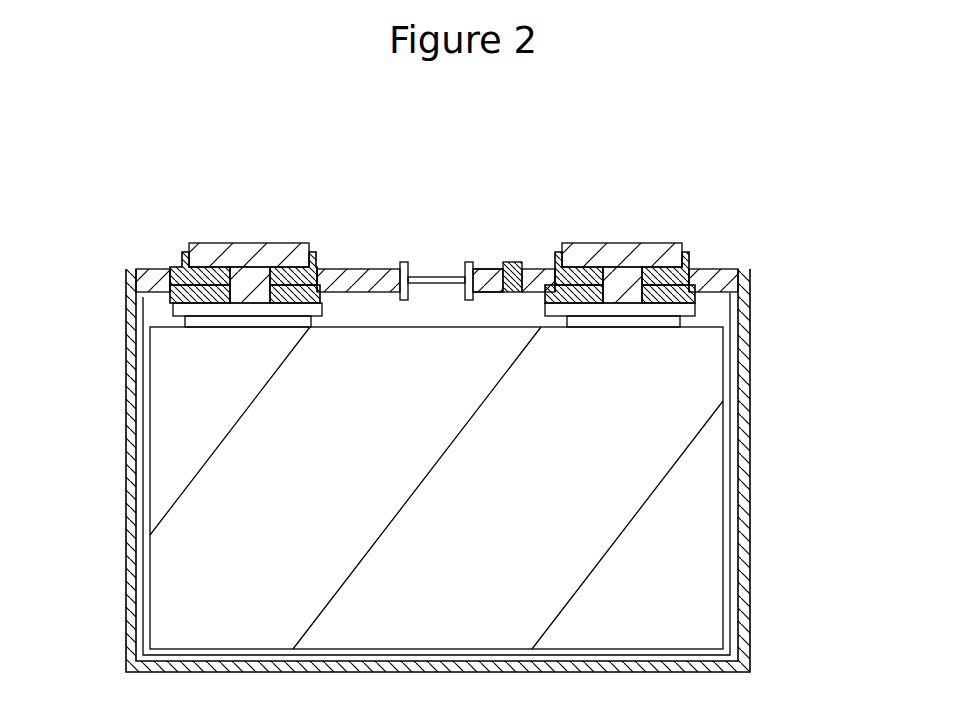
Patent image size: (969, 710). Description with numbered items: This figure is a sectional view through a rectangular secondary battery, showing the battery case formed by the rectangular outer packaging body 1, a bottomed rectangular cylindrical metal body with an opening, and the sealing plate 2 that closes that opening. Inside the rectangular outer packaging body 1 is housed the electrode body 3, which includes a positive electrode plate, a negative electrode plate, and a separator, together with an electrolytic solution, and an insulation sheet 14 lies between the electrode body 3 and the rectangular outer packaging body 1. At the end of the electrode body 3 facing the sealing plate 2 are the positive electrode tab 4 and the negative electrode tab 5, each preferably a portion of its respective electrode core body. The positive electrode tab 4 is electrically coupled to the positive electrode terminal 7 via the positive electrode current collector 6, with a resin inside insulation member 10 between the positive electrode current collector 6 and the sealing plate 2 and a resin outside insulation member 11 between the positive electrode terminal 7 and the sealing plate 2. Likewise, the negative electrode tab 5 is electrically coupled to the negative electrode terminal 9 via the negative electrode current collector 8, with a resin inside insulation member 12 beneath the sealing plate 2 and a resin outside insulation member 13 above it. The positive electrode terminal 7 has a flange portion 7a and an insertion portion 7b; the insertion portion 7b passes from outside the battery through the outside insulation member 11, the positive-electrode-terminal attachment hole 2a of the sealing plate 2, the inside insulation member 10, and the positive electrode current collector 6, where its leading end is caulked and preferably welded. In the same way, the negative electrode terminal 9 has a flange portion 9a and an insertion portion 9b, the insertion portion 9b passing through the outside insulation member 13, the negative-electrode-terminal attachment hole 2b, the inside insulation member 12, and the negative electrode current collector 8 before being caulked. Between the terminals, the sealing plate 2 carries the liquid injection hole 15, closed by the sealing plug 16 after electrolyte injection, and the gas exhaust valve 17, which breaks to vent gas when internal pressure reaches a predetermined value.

The rectangular outer packaging body 1 is at (742, 472).
The sealing plate 2 is at (355, 280).
The positive-electrode-terminal attachment hole 2a is at (612, 285).
The negative-electrode-terminal attachment hole 2b is at (260, 263).
The electrode body 3 is at (243, 497).
The positive electrode tab 4 is at (644, 318).
The negative electrode tab 5 is at (225, 318).
The positive electrode current collector 6 is at (700, 302).
The positive electrode terminal 7 is at (630, 193).
The flange portion 7a is at (577, 255).
The insertion portion 7b is at (631, 283).
The negative electrode current collector 8 is at (173, 299).
The negative electrode terminal 9 is at (258, 202).
The flange portion 9a is at (293, 253).
The insertion portion 9b is at (248, 290).
The inside insulation member 10 is at (703, 273).
The outside insulation member 11 is at (557, 266).
The inside insulation member 12 is at (207, 272).
The outside insulation member 13 is at (182, 255).
The insulation sheet 14 is at (728, 557).
The liquid injection hole 15 is at (492, 268).
The sealing plug 16 is at (518, 265).
The gas exhaust valve 17 is at (422, 280).